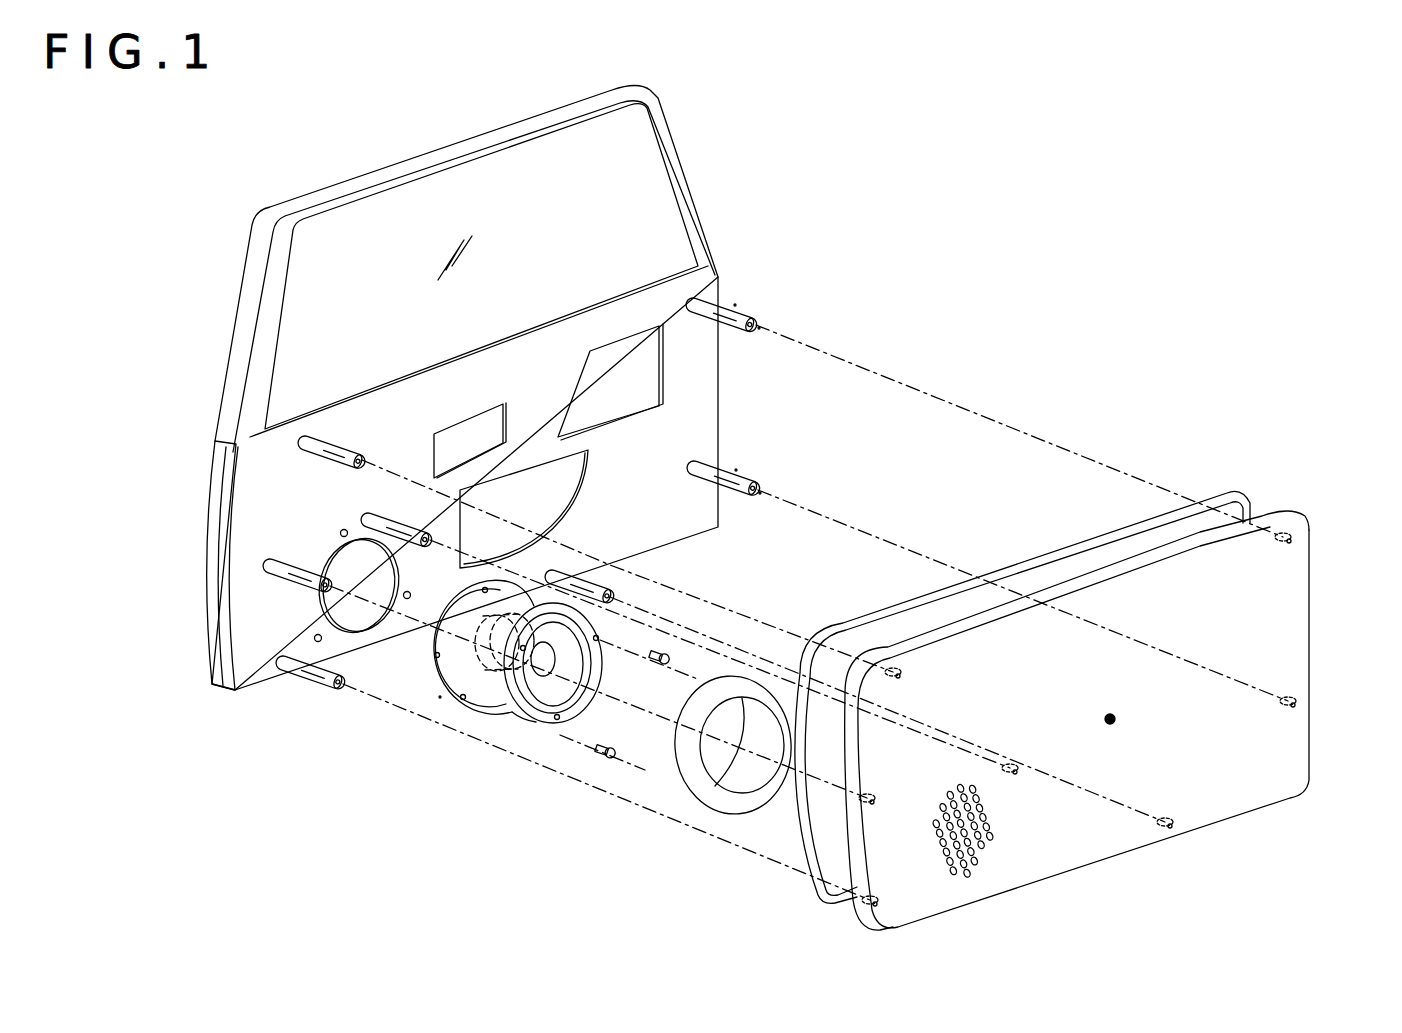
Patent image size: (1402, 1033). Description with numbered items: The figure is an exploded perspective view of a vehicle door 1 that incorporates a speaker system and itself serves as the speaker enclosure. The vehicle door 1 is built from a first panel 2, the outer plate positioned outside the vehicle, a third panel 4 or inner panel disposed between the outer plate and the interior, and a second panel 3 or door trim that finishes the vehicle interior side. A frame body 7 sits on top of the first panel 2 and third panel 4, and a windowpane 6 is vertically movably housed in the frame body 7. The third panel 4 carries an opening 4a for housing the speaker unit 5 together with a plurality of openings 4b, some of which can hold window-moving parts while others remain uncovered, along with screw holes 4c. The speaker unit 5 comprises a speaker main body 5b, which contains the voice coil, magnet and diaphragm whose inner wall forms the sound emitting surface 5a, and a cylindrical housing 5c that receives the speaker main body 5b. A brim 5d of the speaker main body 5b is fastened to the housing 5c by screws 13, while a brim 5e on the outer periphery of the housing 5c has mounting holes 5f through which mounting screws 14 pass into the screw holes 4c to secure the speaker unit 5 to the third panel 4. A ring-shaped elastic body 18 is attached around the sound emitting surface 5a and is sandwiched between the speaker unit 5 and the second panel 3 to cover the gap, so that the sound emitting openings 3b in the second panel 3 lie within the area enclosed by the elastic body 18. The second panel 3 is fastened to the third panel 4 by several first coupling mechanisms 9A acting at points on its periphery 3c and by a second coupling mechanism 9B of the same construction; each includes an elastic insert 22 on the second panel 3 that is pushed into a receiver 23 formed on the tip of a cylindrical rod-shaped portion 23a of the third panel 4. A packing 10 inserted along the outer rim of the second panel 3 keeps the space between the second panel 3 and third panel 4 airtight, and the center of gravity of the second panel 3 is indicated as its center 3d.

The vehicle door 1 is at (228, 290).
The first panel 2 is at (213, 445).
The second panel 3 is at (1245, 750).
The openings 3b is at (988, 858).
The periphery 3c is at (1125, 562).
The center 3d is at (1112, 723).
The third panel 4 is at (690, 385).
The opening 4a is at (348, 568).
The openings 4b is at (523, 485).
The screw holes 4c is at (316, 636).
The speaker unit 5 is at (600, 700).
The sound emitting surface 5a is at (585, 660).
The speaker main body 5b is at (495, 690).
The housing 5c is at (575, 580).
The brim 5d is at (533, 705).
The brim 5e is at (455, 602).
The mounting holes 5f is at (440, 700).
The windowpane 6 is at (663, 232).
The frame body 7 is at (678, 148).
The first coupling mechanisms 9A is at (755, 312).
The second coupling mechanism 9B is at (376, 524).
The packing 10 is at (1020, 572).
The screws 13 is at (557, 715).
The mounting screws 14 is at (616, 760).
The elastic body 18 is at (703, 812).
The insert 22 is at (1277, 540).
The receiver 23 is at (762, 333).
The cylindrical rod-shaped portion 23a is at (733, 303).